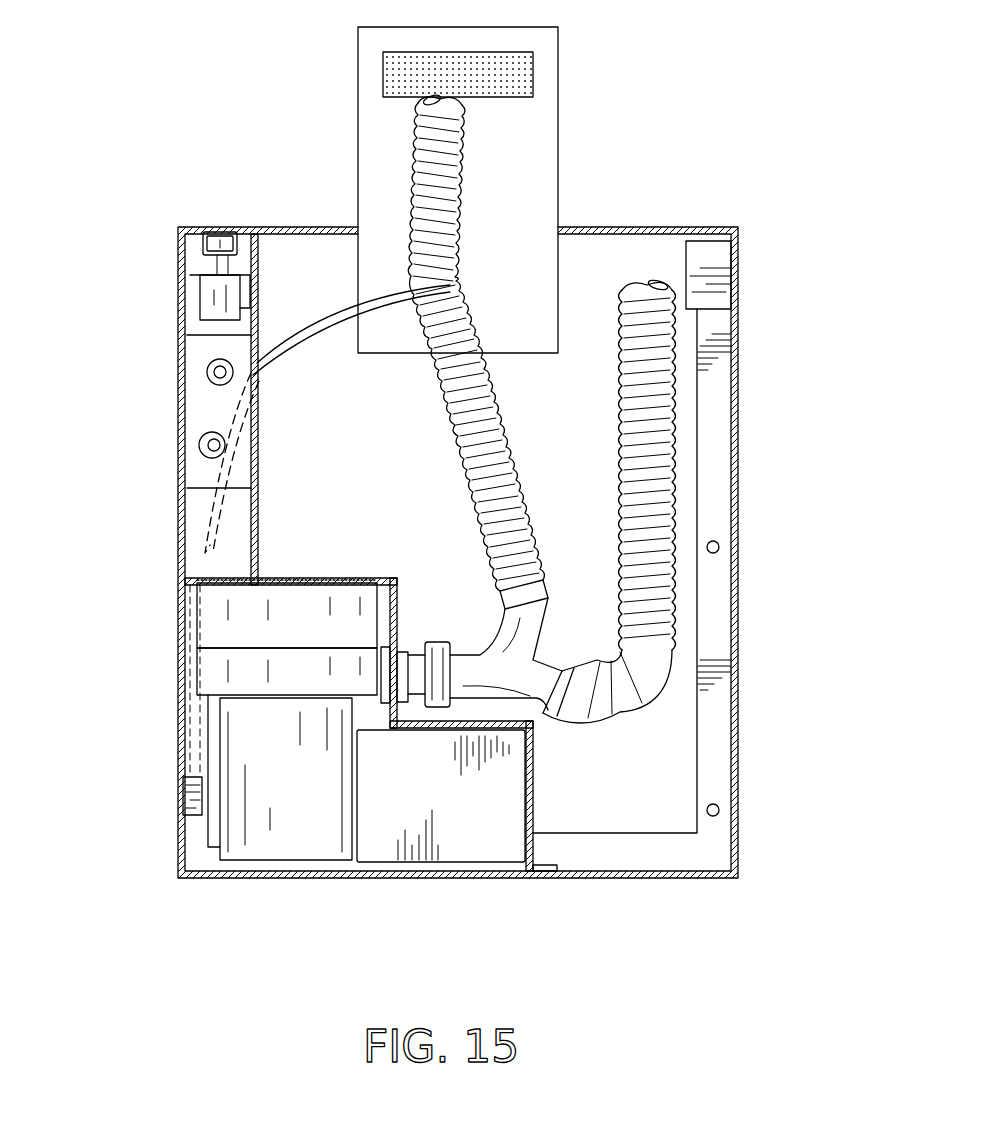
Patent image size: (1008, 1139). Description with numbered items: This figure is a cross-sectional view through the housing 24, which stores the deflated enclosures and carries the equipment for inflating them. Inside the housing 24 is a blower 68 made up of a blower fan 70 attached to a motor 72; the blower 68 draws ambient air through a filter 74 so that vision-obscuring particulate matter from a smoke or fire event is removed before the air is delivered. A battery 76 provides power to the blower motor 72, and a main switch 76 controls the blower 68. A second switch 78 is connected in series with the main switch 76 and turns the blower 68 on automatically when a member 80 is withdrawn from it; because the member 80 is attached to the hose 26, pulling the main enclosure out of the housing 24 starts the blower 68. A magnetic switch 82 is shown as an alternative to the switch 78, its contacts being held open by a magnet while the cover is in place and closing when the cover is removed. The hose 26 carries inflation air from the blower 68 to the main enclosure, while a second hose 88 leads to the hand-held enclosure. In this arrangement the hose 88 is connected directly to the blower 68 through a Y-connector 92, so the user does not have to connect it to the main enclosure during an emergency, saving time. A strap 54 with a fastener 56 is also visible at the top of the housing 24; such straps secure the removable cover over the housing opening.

The housing 24 is at (738, 512).
The hose 26 is at (462, 443).
The strap 54 is at (537, 158).
The fastener 56 is at (527, 73).
The blower 68 is at (270, 792).
The blower fan 70 is at (218, 675).
The motor 72 is at (303, 822).
The filter 74 is at (215, 612).
The battery / main switch 76 is at (197, 250).
The switch 78 is at (185, 780).
The member 80 is at (315, 322).
The magnetic switch 82 is at (720, 262).
The hose 88 is at (625, 490).
The Y-connector 92 is at (483, 657).